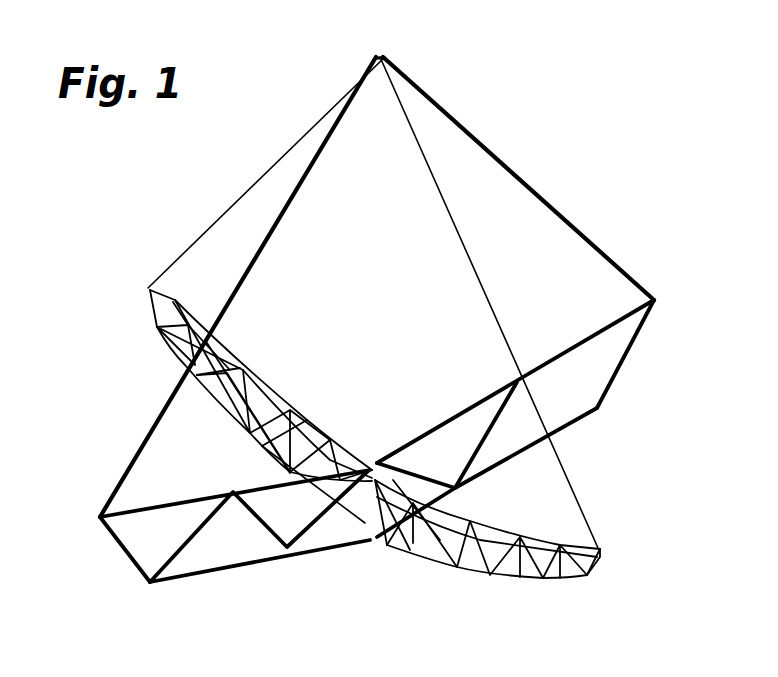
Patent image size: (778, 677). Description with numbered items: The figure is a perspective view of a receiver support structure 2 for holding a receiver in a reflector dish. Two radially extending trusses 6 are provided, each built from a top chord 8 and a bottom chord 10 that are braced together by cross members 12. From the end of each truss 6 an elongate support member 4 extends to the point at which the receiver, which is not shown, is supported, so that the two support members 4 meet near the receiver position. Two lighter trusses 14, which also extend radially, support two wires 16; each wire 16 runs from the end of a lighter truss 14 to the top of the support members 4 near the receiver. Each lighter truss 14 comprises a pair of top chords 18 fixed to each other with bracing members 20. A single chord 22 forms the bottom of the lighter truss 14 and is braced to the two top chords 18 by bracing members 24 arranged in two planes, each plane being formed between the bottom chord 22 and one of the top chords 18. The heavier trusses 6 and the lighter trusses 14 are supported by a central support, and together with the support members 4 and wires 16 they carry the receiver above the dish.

The receiver support structure 2 is at (574, 135).
The elongate support member 4 is at (423, 93).
The radially extending truss 6 is at (590, 470).
The top chord 8 is at (565, 352).
The bottom chord 10 is at (577, 418).
The cross member 12 is at (207, 519).
The lighter truss 14 is at (236, 385).
The wire 16 is at (430, 175).
The top chord 18 is at (297, 438).
The bracing member 20 is at (278, 398).
The bottom chord 22 is at (173, 355).
The bracing member 24 is at (545, 557).